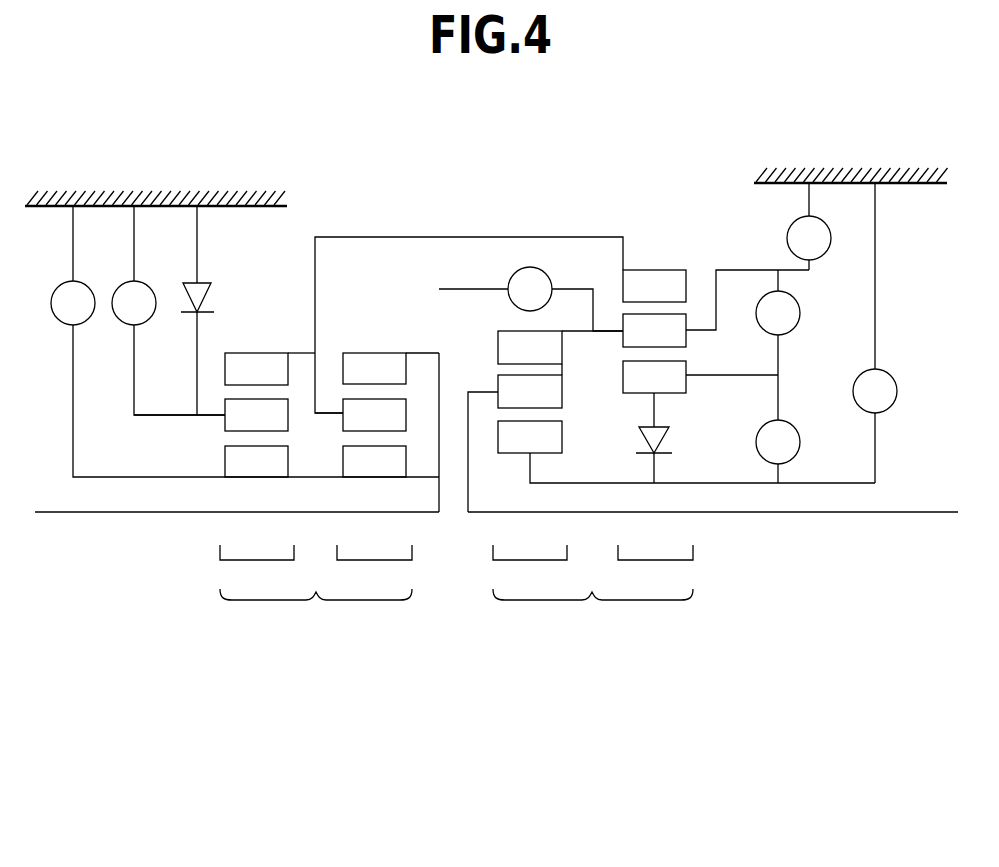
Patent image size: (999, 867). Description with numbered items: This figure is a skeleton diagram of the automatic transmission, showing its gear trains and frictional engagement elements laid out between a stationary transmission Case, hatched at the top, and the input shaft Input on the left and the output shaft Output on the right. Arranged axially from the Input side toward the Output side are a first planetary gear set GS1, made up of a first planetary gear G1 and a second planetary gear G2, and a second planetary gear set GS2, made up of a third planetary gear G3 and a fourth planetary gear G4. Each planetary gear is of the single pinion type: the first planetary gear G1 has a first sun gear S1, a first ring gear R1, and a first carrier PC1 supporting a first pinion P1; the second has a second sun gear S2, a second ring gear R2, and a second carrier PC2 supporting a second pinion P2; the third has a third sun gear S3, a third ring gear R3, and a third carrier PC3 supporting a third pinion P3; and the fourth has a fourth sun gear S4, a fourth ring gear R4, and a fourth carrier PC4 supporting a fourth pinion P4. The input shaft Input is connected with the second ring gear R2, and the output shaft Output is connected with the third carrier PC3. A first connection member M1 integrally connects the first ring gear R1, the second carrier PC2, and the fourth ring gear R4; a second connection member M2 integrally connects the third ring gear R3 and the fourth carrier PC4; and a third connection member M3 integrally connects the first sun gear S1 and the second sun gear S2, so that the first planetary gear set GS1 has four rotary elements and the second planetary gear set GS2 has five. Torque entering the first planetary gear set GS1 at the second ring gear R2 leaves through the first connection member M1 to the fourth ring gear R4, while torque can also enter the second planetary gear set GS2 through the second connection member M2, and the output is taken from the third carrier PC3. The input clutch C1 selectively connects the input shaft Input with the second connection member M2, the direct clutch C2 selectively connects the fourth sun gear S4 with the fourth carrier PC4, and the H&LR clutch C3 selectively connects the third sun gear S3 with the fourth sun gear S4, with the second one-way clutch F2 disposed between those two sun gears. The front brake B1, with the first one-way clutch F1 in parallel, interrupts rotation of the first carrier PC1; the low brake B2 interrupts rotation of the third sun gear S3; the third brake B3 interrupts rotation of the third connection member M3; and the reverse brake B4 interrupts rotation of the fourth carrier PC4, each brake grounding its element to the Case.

The transmission case Case is at (102, 208).
The front brake B1 is at (168, 310).
The low brake B2 is at (875, 333).
The 2346 brake B3 is at (138, 341).
The reverse brake B4 is at (809, 226).
The input clutch C1 is at (531, 389).
The direct clutch C2 is at (778, 345).
The H&LR clutch C3 is at (778, 451).
The first one-way clutch F1 is at (199, 284).
The second one-way clutch F2 is at (668, 440).
The first ring gear R1 is at (270, 369).
The first pinion P1 is at (256, 415).
The first sun gear S1 is at (256, 461).
The second ring gear R2 is at (391, 368).
The second pinion P2 is at (374, 415).
The second sun gear S2 is at (374, 461).
The third ring gear R3 is at (530, 353).
The third pinion P3 is at (530, 391).
The third sun gear S3 is at (686, 452).
The fourth ring gear R4 is at (654, 286).
The fourth pinion P4 is at (654, 330).
The fourth sun gear S4 is at (700, 377).
The first carrier PC1 is at (219, 417).
The second carrier PC2 is at (338, 416).
The third carrier PC3 is at (490, 392).
The fourth carrier PC4 is at (700, 333).
The first connection member M1 is at (437, 237).
The second connection member M2 is at (583, 333).
The third connection member M3 is at (330, 477).
The first planetary gear G1 is at (257, 566).
The second planetary gear G2 is at (374, 566).
The third planetary gear G3 is at (530, 566).
The fourth planetary gear G4 is at (655, 566).
The first planetary gear set GS1 is at (316, 611).
The second planetary gear set GS2 is at (593, 611).
The input shaft Input is at (89, 512).
The output shaft Output is at (867, 512).